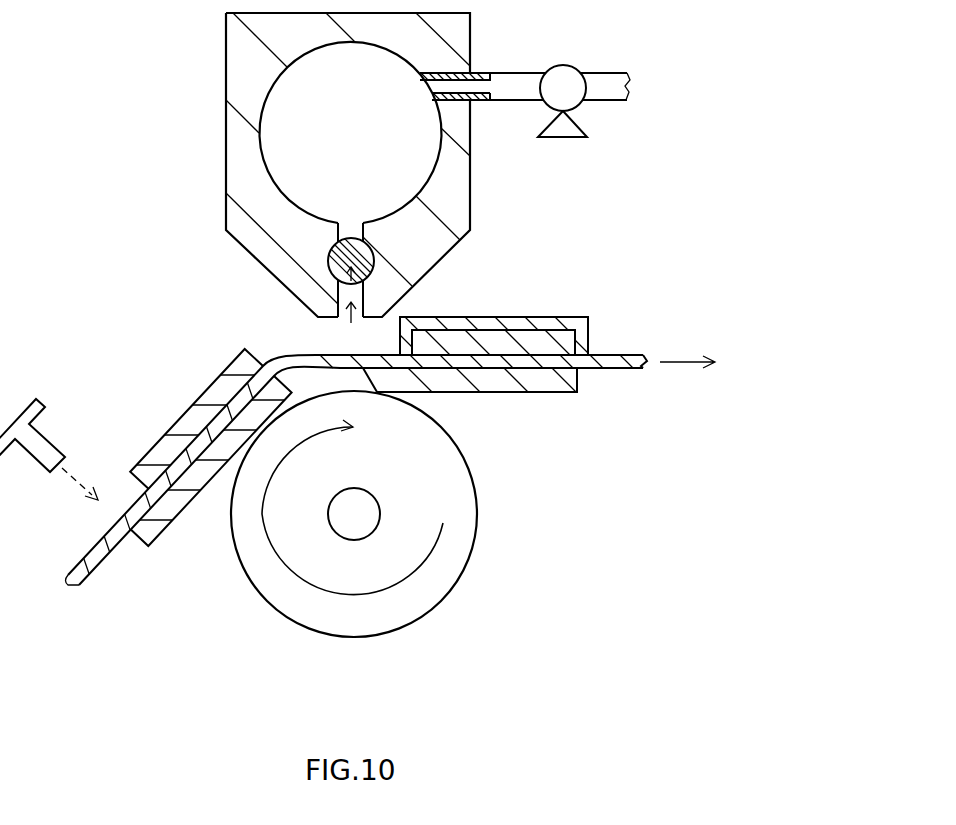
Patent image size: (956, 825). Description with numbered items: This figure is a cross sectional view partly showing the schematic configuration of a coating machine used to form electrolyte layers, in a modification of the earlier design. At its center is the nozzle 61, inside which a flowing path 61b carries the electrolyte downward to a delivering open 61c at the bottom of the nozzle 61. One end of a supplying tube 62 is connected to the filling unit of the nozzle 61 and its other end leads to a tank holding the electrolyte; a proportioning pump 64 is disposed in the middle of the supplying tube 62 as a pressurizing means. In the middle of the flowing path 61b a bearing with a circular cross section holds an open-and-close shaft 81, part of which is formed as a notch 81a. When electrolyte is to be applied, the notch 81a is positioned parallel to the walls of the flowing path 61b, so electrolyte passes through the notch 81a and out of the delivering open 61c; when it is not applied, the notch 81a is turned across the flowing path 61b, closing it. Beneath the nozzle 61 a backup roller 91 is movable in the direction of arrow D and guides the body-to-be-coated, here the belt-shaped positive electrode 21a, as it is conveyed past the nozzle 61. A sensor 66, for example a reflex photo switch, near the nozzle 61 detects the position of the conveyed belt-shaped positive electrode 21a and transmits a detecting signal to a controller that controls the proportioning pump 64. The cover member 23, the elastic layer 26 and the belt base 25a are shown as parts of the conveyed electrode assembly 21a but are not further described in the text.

The nozzle 61 is at (237, 141).
The flowing path 61b is at (363, 229).
The delivering open 61c is at (352, 289).
The supplying tube 62 is at (512, 73).
The proportioning pump 64 is at (585, 67).
The open-and-close shaft 81 is at (330, 253).
The notch 81a is at (338, 294).
The cover member 23 is at (449, 325).
The belt-shaped positive electrode 21a is at (647, 280).
The elastic layer 26 is at (160, 450).
The web / belt base 25a is at (610, 362).
The sensor 66 is at (55, 438).
The backup roller 91 is at (460, 447).